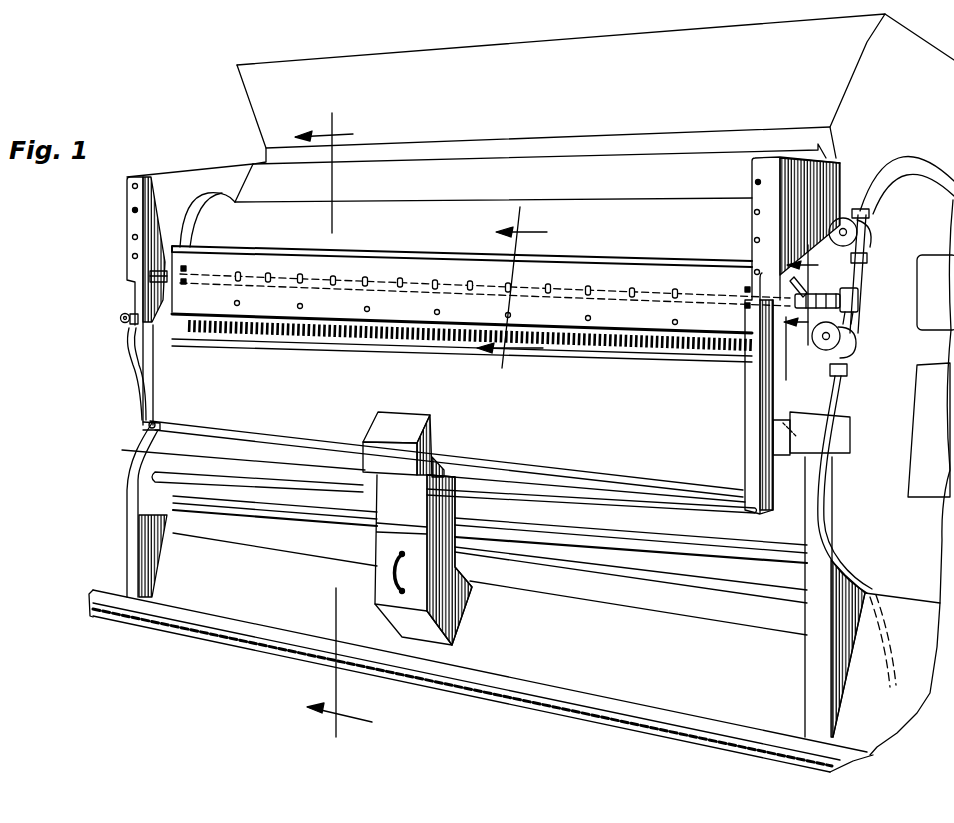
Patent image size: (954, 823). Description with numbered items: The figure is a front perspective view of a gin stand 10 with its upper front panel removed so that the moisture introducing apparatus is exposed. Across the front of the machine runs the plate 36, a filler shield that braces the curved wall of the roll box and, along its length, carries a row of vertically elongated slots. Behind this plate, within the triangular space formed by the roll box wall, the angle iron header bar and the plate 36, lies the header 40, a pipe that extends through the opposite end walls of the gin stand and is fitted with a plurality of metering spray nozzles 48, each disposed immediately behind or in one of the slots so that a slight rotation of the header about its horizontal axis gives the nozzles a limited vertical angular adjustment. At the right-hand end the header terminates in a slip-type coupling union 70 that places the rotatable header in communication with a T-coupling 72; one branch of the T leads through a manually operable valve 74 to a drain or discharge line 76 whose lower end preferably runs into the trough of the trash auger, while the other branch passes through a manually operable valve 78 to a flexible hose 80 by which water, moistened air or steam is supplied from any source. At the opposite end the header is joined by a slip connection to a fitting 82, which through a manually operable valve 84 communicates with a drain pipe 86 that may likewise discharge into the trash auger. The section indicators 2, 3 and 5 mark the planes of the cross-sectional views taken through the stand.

The section line 2- 2 is at (320, 420).
The section line 3- 3 is at (502, 294).
The section line 5- 5 is at (801, 297).
The gin stand 10 is at (130, 418).
The filler shield plate 36 is at (558, 315).
The header 40 is at (253, 277).
The metering spray nozzles 48 is at (588, 285).
The coupling union 70 is at (810, 294).
The T-coupling 72 is at (858, 293).
The manually operable valve 74 is at (857, 353).
The drain or discharge line 76 is at (838, 402).
The manually operable valve 78 is at (872, 233).
The flexible hose 80 is at (920, 150).
The fitting 82 is at (143, 282).
The manually operable valve 84 is at (120, 328).
The drain pipe 86 is at (133, 368).